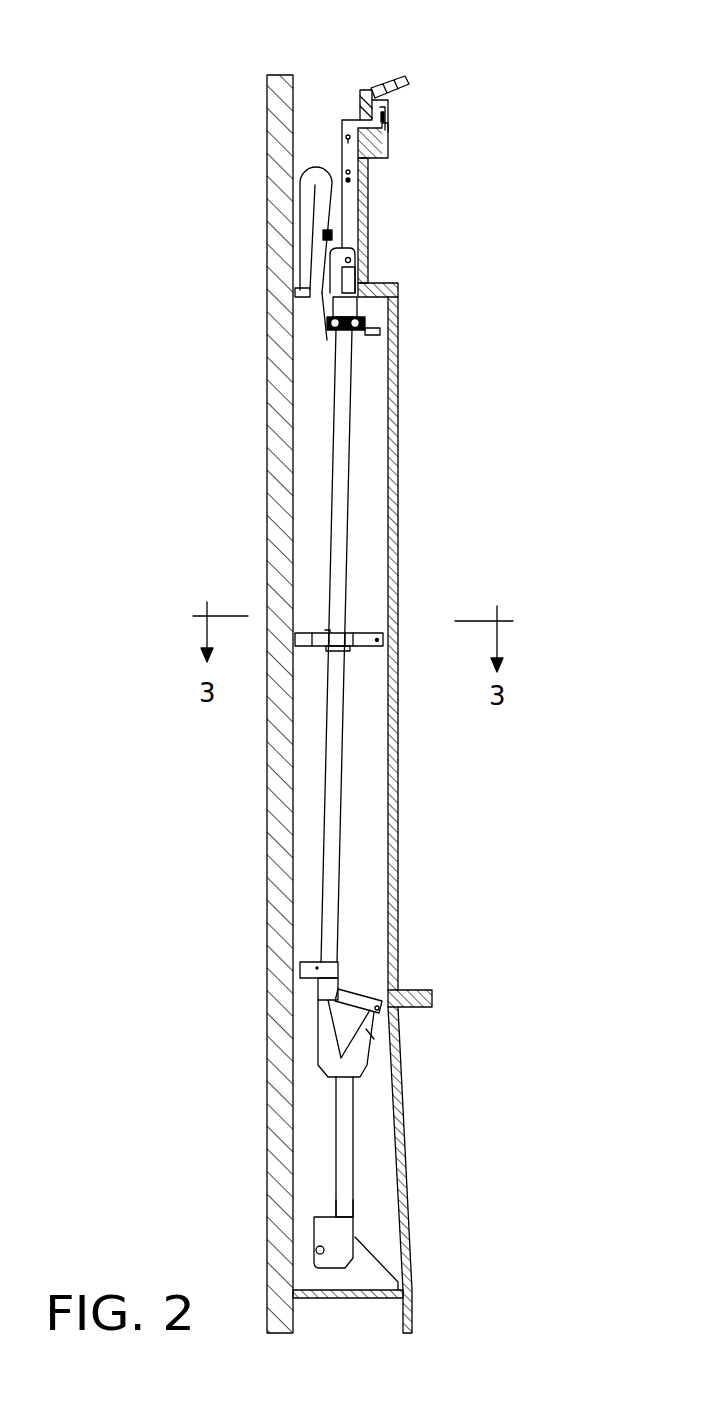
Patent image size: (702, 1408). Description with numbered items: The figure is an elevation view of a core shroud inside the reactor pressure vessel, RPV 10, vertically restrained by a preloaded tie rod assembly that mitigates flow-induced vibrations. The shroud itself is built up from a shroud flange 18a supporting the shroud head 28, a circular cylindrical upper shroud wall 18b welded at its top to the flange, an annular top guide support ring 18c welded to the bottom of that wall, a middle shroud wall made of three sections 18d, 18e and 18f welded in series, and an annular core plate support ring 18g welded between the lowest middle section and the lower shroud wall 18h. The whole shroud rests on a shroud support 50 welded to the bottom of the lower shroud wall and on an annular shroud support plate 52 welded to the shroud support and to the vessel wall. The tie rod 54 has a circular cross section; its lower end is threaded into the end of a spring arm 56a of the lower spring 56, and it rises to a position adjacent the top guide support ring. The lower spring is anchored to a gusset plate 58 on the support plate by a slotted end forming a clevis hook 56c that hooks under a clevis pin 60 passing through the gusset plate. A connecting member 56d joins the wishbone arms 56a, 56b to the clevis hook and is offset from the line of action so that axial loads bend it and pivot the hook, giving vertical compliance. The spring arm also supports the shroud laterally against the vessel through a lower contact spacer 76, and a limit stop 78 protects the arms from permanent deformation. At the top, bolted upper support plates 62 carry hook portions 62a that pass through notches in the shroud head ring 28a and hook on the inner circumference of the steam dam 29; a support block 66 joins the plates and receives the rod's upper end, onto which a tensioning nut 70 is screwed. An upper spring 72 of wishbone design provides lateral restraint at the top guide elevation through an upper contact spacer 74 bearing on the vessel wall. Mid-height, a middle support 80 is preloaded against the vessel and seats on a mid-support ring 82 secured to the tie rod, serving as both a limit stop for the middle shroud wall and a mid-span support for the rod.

The RPV 10 is at (267, 541).
The shroud flange 18a is at (385, 140).
The upper shroud wall 18b is at (368, 226).
The top guide support ring 18c is at (396, 290).
The middle shroud wall section 18d is at (398, 440).
The middle shroud wall section 18e is at (398, 715).
The middle shroud wall section 18f is at (398, 818).
The core plate support ring 18g is at (412, 1008).
The lower shroud wall 18h is at (404, 1170).
The shroud head 28 is at (389, 79).
The shroud head ring 28a is at (357, 114).
The steam dam 29 is at (386, 121).
The shroud support 50 is at (412, 1275).
The shroud support plate 52 is at (330, 1298).
The tie rod 54 is at (325, 806).
The lower spring 56 is at (334, 1160).
The spring arm 56a is at (318, 1036).
The spring arm 56b is at (374, 1039).
The clevis hook 56c is at (350, 1225).
The connecting member 56d is at (345, 1122).
The gusset plate 58 is at (310, 1238).
The clevis pin 60 is at (316, 1251).
The upper support plate 62 is at (339, 145).
The hook portion 62a is at (389, 112).
The support block 66 is at (373, 336).
The tensioning nut 70 is at (353, 303).
The upper spring 72 is at (302, 183).
The upper contact spacer 74 is at (296, 291).
The lower contact spacer 76 is at (300, 966).
The limit stop 78 is at (384, 998).
The middle support 80 is at (371, 633).
The mid-support ring 82 is at (348, 649).